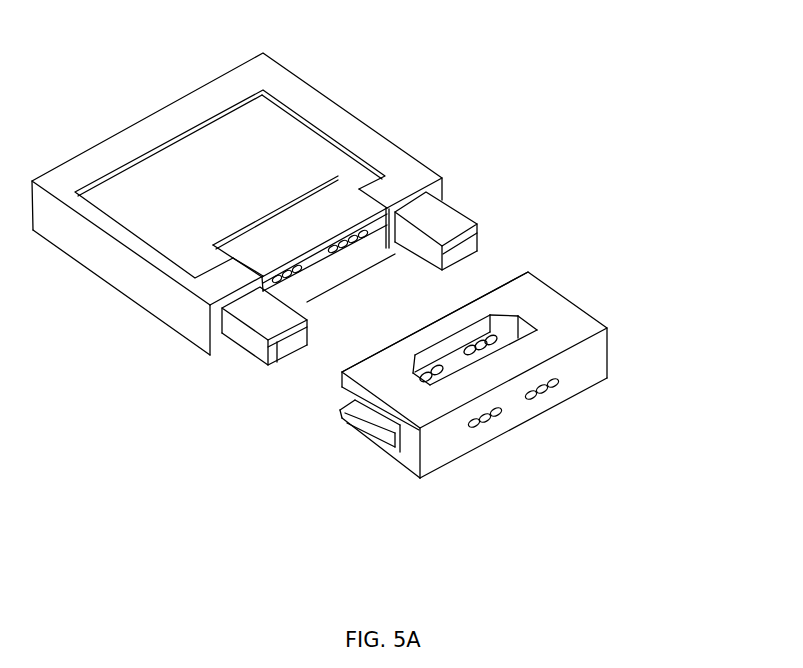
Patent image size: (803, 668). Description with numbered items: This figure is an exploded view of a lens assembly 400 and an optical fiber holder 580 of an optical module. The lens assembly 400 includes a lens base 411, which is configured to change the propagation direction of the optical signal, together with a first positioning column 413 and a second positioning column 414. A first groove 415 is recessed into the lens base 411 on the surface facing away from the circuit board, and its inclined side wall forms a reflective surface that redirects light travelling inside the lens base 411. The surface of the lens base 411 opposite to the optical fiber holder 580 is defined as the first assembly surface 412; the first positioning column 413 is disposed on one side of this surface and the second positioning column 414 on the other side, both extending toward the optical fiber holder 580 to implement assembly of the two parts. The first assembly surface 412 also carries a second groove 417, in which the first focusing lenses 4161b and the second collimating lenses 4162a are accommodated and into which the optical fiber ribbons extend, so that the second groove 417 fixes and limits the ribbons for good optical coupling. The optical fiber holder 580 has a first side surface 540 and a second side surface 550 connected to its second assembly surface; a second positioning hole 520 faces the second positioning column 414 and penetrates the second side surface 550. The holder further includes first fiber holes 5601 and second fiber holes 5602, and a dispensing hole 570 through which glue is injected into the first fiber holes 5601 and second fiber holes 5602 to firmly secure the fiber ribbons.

The lens assembly 400 is at (128, 90).
The lens base 411 is at (273, 112).
The first assembly surface 412 is at (357, 260).
The first positioning column 413 is at (423, 215).
The second positioning column 414 is at (258, 318).
The first groove 415 is at (337, 217).
The second groove 417 is at (303, 273).
The first focusing lenses 4161b is at (281, 283).
The second collimating lenses 4162a is at (400, 226).
The second positioning hole 520 is at (380, 425).
The first side surface 540 is at (603, 320).
The second side surface 550 is at (417, 461).
The dispensing hole 570 is at (507, 333).
The optical fiber holder 580 is at (548, 338).
The first fiber holes 5601 is at (477, 428).
The second fiber holes 5602 is at (557, 378).